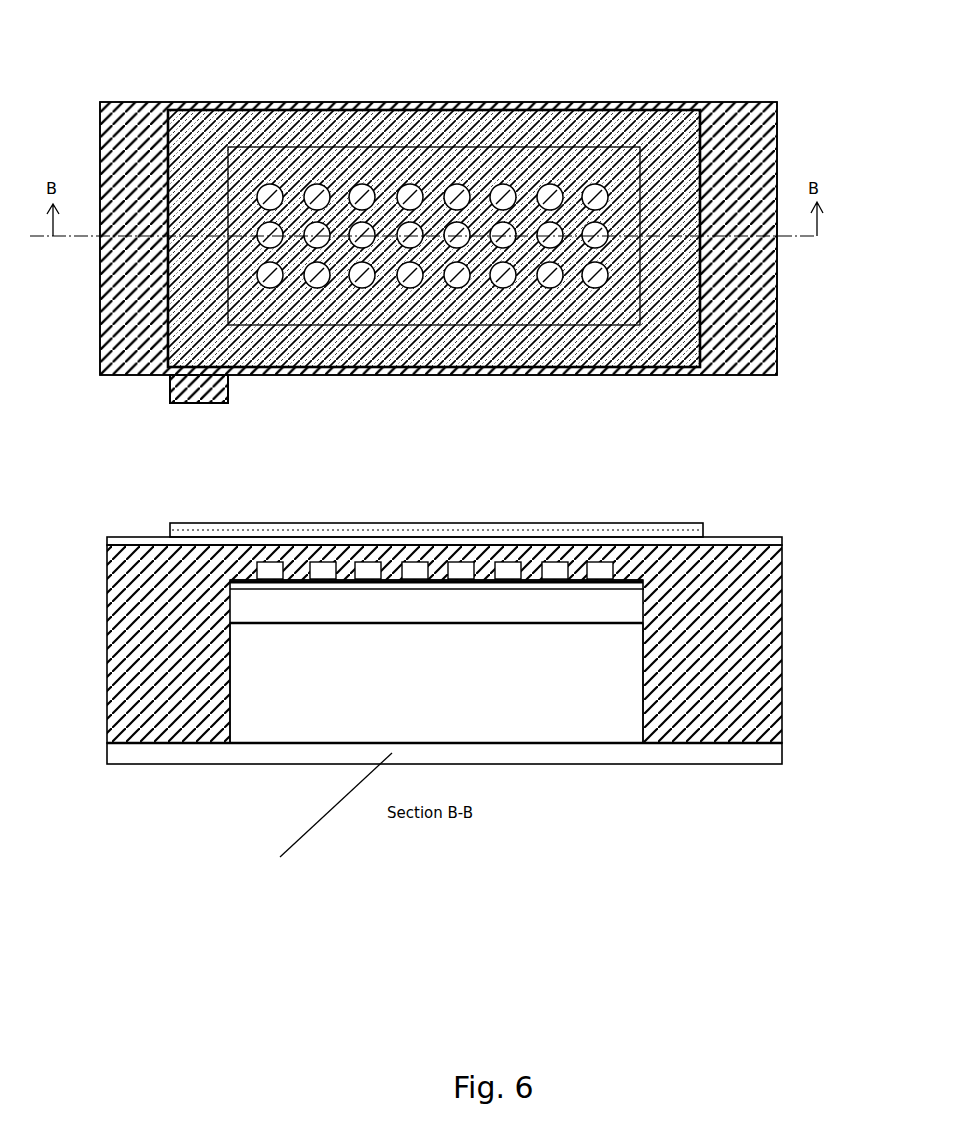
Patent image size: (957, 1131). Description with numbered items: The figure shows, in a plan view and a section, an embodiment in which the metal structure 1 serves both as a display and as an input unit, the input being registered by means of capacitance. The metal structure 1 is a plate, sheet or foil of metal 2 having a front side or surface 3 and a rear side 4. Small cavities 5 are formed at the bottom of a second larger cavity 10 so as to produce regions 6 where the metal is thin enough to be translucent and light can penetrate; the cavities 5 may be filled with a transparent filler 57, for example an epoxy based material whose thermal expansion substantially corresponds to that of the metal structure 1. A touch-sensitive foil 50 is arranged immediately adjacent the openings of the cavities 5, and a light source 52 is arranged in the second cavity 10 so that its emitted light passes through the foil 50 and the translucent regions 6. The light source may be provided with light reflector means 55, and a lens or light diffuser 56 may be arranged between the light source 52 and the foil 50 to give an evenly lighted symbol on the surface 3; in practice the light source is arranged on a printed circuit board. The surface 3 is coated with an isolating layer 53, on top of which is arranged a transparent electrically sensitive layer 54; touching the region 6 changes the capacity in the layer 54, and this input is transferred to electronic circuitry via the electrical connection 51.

The metal structure 1 is at (104, 76).
The metal 2 is at (748, 356).
The front side or surface 3 is at (211, 534).
The rear side 4 is at (223, 746).
The cavities 5 is at (311, 186).
The translucent regions 6 is at (362, 545).
The second larger cavity 10 is at (457, 145).
The touch-sensitive foil 50 is at (543, 125).
The electrical connection 51 is at (190, 408).
The light source 52 is at (514, 690).
The isolating layer 53 is at (748, 541).
The transparent electrically sensitive layer 54 is at (696, 526).
The light reflector means 55 is at (488, 728).
The lens or light diffuser 56 is at (563, 607).
The transparent filler 57 is at (427, 570).